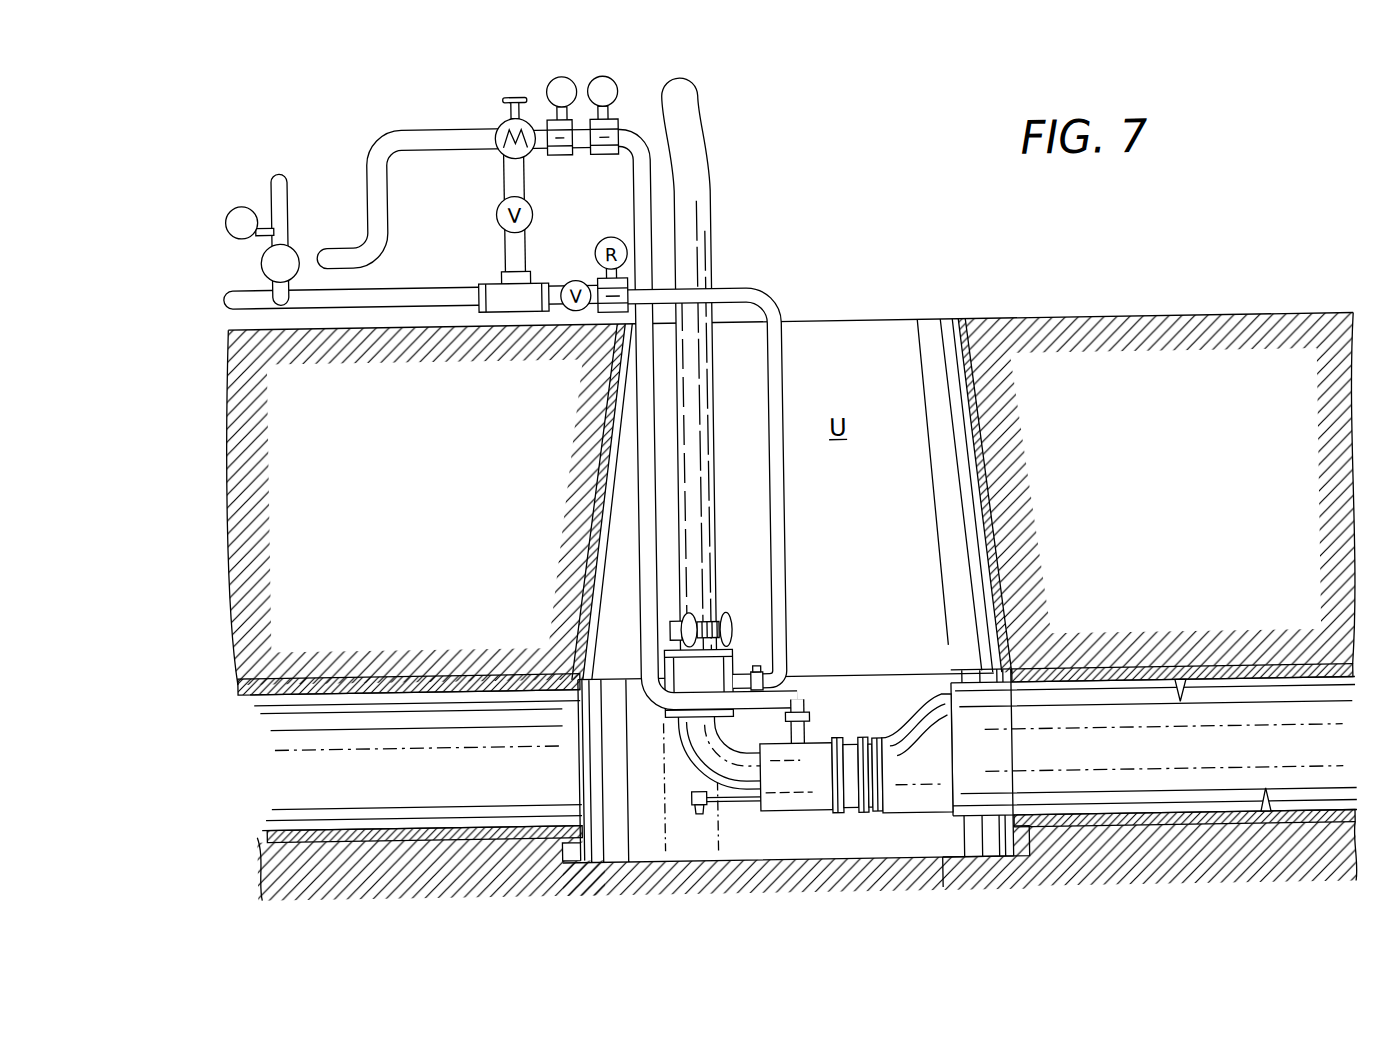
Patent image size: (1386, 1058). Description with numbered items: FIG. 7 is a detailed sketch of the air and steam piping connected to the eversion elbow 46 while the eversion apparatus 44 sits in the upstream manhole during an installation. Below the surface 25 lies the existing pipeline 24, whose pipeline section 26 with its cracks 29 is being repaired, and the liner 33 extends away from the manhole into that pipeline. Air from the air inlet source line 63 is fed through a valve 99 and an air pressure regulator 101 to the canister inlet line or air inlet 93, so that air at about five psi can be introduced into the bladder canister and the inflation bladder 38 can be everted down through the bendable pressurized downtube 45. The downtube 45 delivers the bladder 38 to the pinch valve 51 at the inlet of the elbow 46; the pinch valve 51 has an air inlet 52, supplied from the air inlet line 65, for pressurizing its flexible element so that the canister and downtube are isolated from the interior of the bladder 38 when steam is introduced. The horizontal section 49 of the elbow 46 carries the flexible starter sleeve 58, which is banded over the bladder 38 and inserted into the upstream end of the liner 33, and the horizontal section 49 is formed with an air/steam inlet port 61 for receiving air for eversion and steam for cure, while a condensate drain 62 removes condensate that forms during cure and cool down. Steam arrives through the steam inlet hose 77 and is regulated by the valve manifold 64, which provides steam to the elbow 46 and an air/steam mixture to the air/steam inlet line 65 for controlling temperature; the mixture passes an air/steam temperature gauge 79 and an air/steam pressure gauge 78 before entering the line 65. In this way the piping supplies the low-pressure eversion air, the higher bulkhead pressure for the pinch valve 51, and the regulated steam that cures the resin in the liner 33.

The existing pipeline 24 is at (385, 671).
The surface 25 is at (1134, 318).
The pipeline section 26 is at (1162, 832).
The cracks 29 is at (1178, 684).
The liner 33 is at (1051, 719).
The inflation bladder 38 is at (721, 160).
The eversion apparatus 44 is at (728, 333).
The pressurized downtube 45 is at (714, 449).
The eversion elbow 46 is at (683, 768).
The horizontal section 49 is at (813, 761).
The pinch valve 51 is at (700, 689).
The air inlet 52 is at (741, 671).
The starter sleeve 58 is at (901, 764).
The air/steam inlet port 61 is at (806, 732).
The condensate drain 62 is at (723, 804).
The air inlet source line 63 is at (472, 282).
The valve manifold 64 is at (489, 114).
The air/steam inlet line 65 is at (645, 196).
The steam inlet hose 77 is at (363, 216).
The air/steam pressure gauge 78 is at (625, 90).
The air/steam temperature gauge 79 is at (554, 85).
The air inlet 93 is at (295, 176).
The valve 99 is at (265, 262).
The air pressure regulator 101 is at (245, 198).